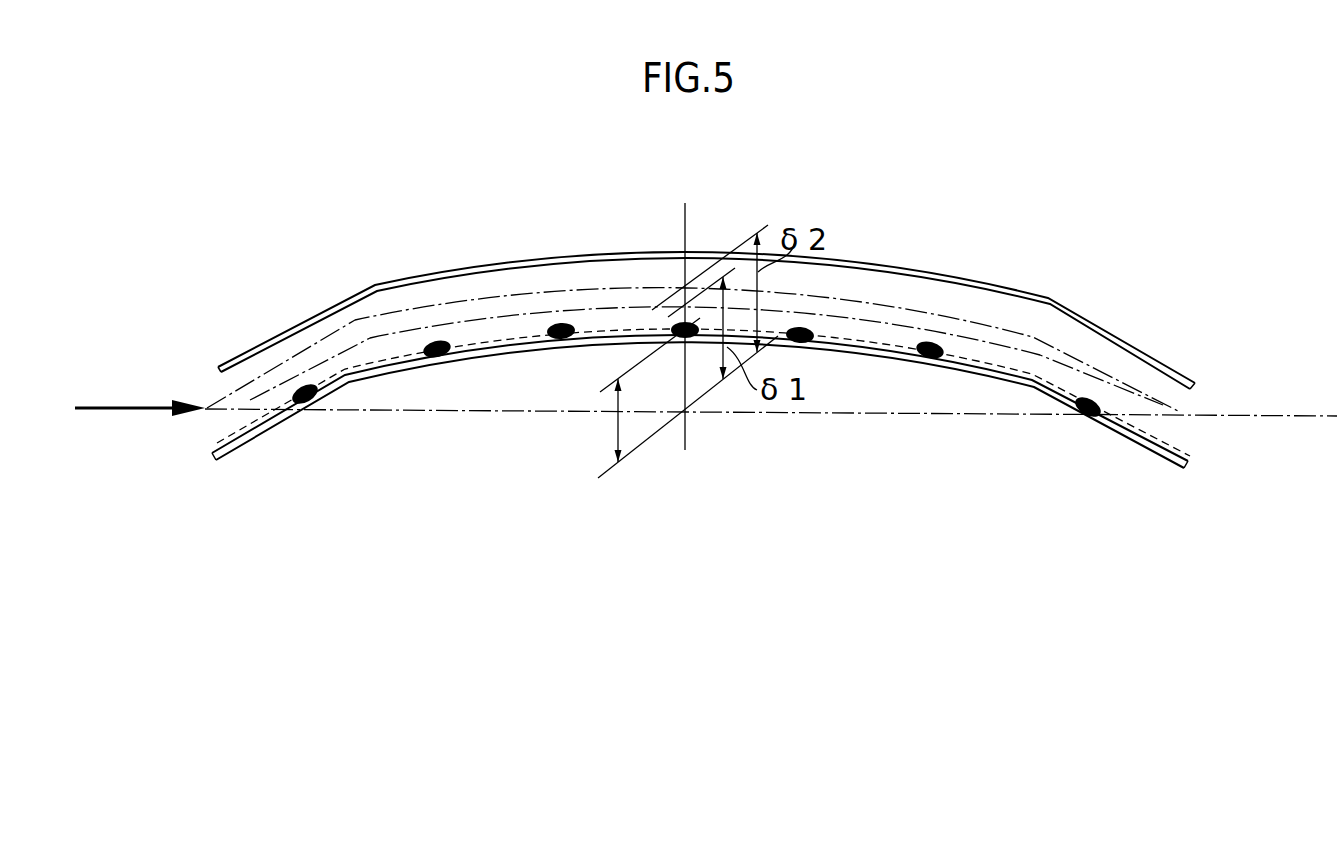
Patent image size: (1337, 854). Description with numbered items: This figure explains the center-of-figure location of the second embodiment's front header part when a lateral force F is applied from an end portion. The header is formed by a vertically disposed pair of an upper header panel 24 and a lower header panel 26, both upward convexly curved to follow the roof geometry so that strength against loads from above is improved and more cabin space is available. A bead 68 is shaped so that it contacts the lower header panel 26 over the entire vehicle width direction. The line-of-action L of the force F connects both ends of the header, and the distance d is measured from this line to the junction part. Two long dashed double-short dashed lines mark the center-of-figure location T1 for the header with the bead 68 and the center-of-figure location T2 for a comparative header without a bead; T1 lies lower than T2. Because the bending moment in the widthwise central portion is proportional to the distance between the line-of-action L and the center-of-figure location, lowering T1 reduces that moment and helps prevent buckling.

The upper header panel 24 is at (967, 277).
The lower header panel 26 is at (1153, 453).
The bead 68 is at (217, 443).
The center-of-figure location T1 is at (395, 333).
The center-of-figure location T2 is at (453, 307).
The line-of-action L is at (1280, 418).
The lateral force F is at (140, 391).
The distance d is at (609, 420).